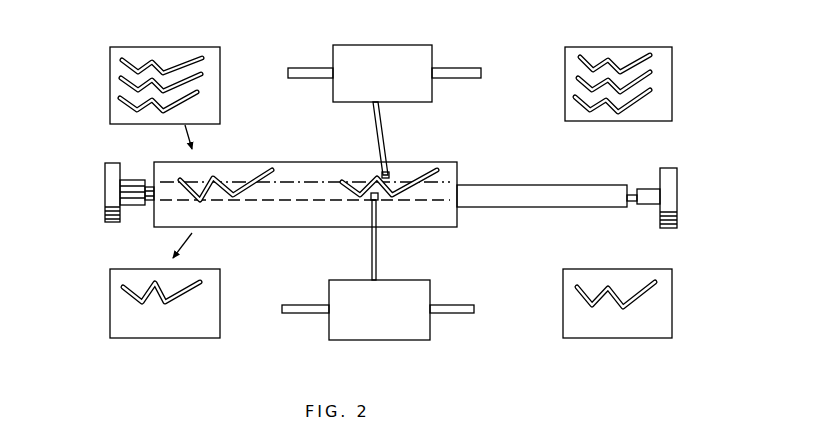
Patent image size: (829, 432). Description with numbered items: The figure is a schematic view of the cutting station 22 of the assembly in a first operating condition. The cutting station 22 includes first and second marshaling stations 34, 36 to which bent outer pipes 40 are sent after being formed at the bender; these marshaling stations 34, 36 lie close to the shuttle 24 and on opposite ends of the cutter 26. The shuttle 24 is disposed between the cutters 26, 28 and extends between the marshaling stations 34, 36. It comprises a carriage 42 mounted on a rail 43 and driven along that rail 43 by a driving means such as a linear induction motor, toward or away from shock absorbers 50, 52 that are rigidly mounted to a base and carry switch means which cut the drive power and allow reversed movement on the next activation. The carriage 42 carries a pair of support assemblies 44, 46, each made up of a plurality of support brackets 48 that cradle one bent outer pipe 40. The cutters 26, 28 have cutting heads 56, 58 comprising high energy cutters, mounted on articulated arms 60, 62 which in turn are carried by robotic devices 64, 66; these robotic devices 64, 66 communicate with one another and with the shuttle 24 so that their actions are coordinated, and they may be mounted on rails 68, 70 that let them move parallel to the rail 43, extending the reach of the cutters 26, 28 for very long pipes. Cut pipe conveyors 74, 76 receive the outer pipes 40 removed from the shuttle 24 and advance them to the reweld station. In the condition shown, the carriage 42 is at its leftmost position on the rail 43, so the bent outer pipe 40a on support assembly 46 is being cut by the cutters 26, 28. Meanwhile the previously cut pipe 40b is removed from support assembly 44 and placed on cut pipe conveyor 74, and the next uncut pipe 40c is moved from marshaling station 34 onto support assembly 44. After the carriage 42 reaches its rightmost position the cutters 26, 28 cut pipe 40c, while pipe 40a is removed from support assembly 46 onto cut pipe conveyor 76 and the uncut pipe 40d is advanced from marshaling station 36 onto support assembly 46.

The cutting station 22 is at (93, 61).
The shuttle 24 is at (100, 213).
The cutter 26 is at (388, 56).
The cutter 28 is at (376, 302).
The first marshaling station 34 is at (165, 46).
The second marshaling station 36 is at (605, 47).
The bent outer pipes 40 is at (120, 62).
The bent outer pipe 40a is at (432, 166).
The previously cut pipe 40b is at (187, 185).
The uncut pipe 40c is at (120, 102).
The bent but uncut outer pipe 40d is at (652, 93).
The carriage 42 is at (153, 165).
The rail 43 is at (586, 185).
The support assembly 44 is at (232, 175).
The support assembly 46 is at (347, 200).
The support brackets 48 is at (345, 178).
The shock absorber 50 is at (108, 192).
The shock absorber 52 is at (677, 196).
The cutting head 56 is at (389, 173).
The cutting head 58 is at (380, 201).
The articulated arm 60 is at (373, 114).
The articulated arm 62 is at (371, 259).
The robotic device 64 is at (427, 45).
The robotic device 66 is at (329, 326).
The rail 68 is at (472, 68).
The rail 70 is at (459, 305).
The cut pipe conveyor 74 is at (110, 321).
The cut pipe conveyor 76 is at (672, 308).